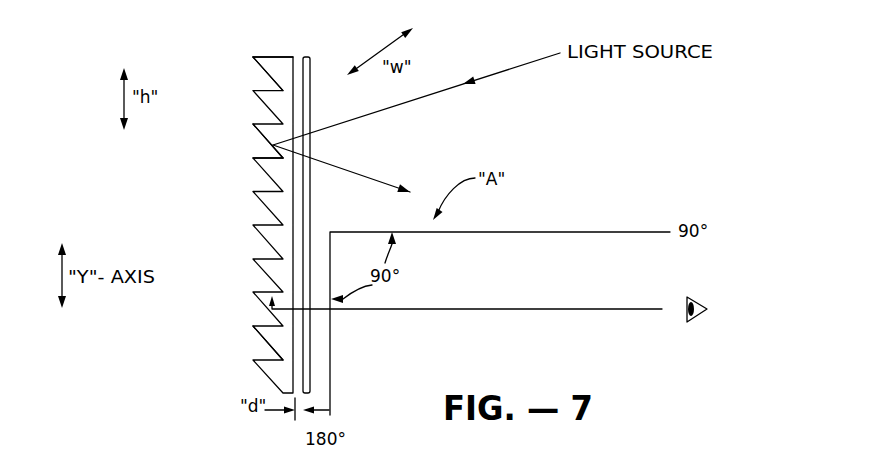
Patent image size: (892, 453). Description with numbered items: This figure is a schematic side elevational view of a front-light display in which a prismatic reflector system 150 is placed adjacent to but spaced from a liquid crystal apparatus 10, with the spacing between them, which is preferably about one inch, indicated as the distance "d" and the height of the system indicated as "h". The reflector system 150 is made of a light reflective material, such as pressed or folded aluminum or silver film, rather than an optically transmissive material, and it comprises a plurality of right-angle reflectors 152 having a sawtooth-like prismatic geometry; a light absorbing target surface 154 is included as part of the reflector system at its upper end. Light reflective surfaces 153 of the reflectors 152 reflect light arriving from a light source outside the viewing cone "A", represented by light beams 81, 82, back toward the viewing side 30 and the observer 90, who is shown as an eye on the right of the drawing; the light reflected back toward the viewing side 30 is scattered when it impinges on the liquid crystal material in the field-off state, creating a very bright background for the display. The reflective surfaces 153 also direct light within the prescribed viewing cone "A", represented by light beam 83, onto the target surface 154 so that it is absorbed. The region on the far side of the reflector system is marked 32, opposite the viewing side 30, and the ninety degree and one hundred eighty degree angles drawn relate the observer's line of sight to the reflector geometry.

The liquid crystal apparatus 10 is at (316, 48).
The viewing side 30 is at (594, 156).
The rear side region 32 is at (160, 339).
The light beam 81 is at (428, 98).
The light beam 82 is at (375, 173).
The light beam 83 is at (457, 310).
The observer 90 is at (703, 303).
The prismatic reflector system 150 is at (242, 68).
The right-angle reflector 152 is at (270, 160).
The light reflective surface 153 is at (278, 80).
The target surface 154 is at (275, 57).